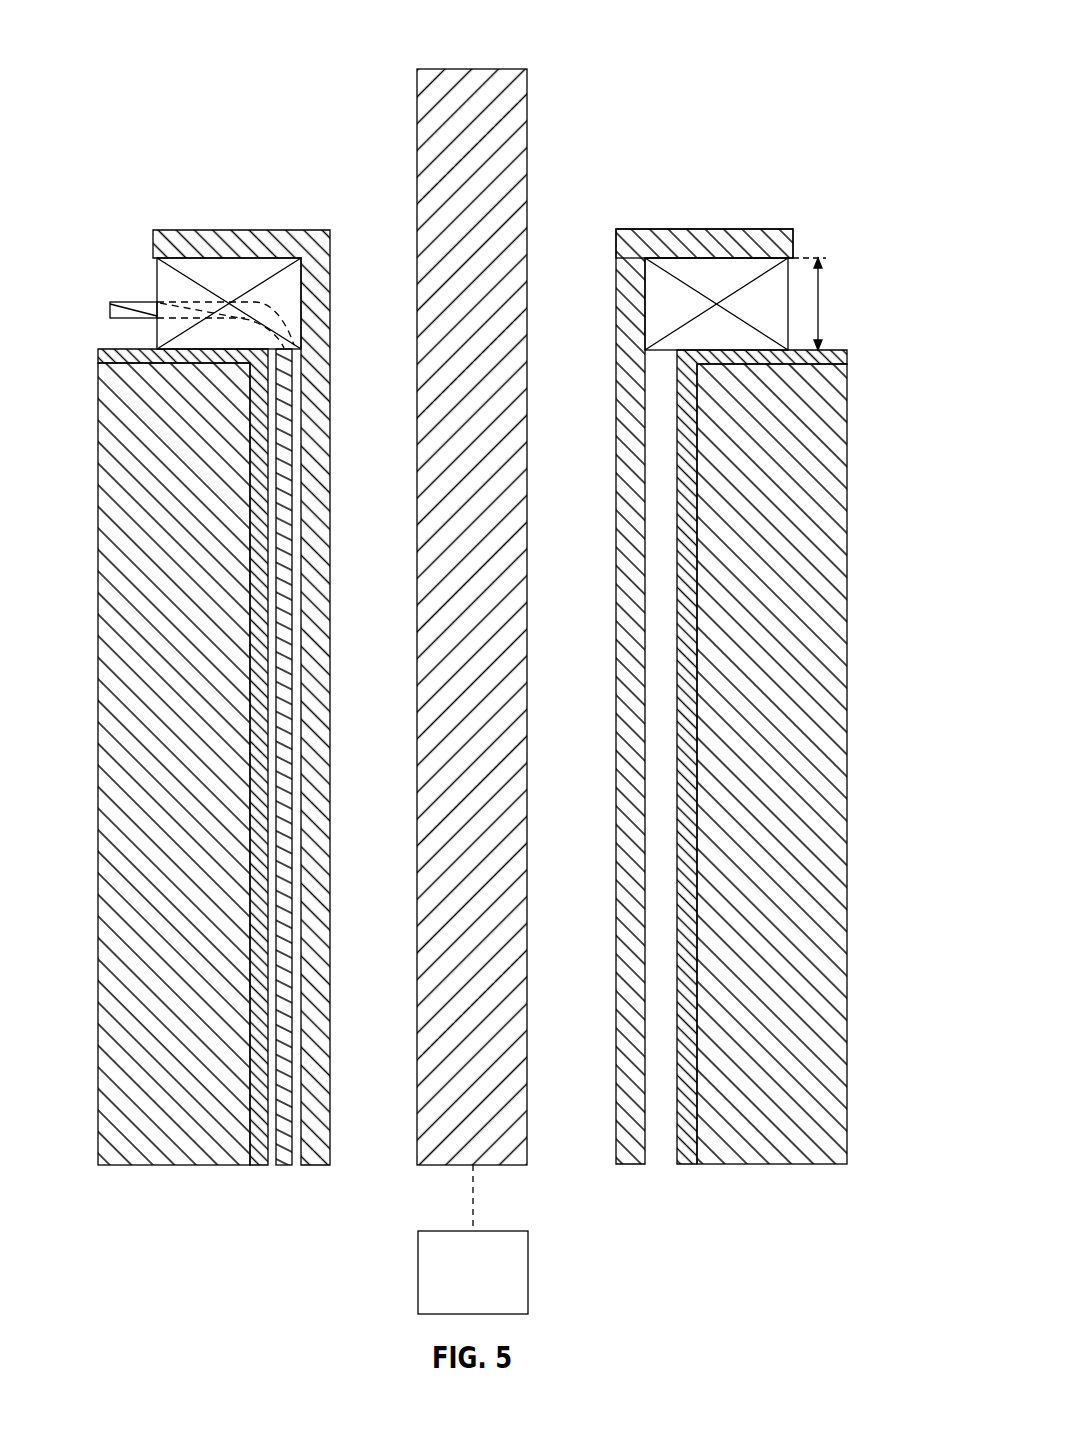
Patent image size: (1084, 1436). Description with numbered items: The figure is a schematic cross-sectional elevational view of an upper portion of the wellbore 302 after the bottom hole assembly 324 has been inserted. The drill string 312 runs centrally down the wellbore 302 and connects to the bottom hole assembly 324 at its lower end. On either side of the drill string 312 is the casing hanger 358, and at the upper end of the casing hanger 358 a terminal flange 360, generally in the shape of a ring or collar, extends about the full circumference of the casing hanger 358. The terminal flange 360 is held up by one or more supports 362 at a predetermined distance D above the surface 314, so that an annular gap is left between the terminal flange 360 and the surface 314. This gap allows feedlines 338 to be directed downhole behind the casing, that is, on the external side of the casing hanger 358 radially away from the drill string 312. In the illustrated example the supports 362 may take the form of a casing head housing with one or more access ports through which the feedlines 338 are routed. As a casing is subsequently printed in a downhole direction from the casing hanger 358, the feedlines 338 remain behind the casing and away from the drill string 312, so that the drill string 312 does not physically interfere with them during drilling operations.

The drill string 312 is at (475, 67).
The bottom hole assembly 324 is at (418, 1274).
The casing hanger 358 is at (332, 1164).
The terminal flange 360 is at (680, 228).
The supports 362 is at (217, 282).
The feedlines 338 is at (283, 1168).
The surface 314 is at (843, 350).
The wellbore 302 is at (660, 1153).
The predetermined distance D is at (820, 303).